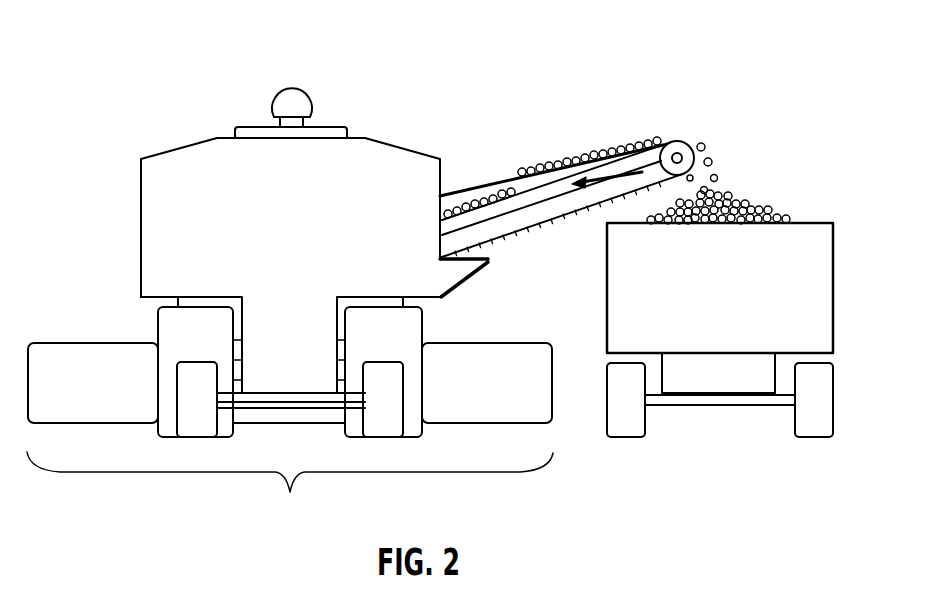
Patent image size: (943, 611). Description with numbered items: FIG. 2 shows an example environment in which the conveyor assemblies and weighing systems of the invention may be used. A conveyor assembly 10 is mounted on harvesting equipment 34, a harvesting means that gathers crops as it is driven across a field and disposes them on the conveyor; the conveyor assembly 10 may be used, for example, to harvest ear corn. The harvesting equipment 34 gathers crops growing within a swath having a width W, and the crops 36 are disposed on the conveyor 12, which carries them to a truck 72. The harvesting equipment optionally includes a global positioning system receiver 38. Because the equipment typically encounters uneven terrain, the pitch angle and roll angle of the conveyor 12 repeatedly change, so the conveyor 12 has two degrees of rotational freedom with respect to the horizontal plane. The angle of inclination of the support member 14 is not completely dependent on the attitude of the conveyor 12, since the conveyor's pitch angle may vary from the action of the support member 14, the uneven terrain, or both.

The conveyor assembly 10 is at (663, 77).
The conveyor 12 is at (672, 147).
The support member 14 is at (492, 186).
The harvesting equipment 34 is at (140, 199).
The crops 36 is at (637, 145).
The global positioning system receiver 38 is at (289, 104).
The truck 72 is at (808, 285).
The swath width W is at (290, 488).